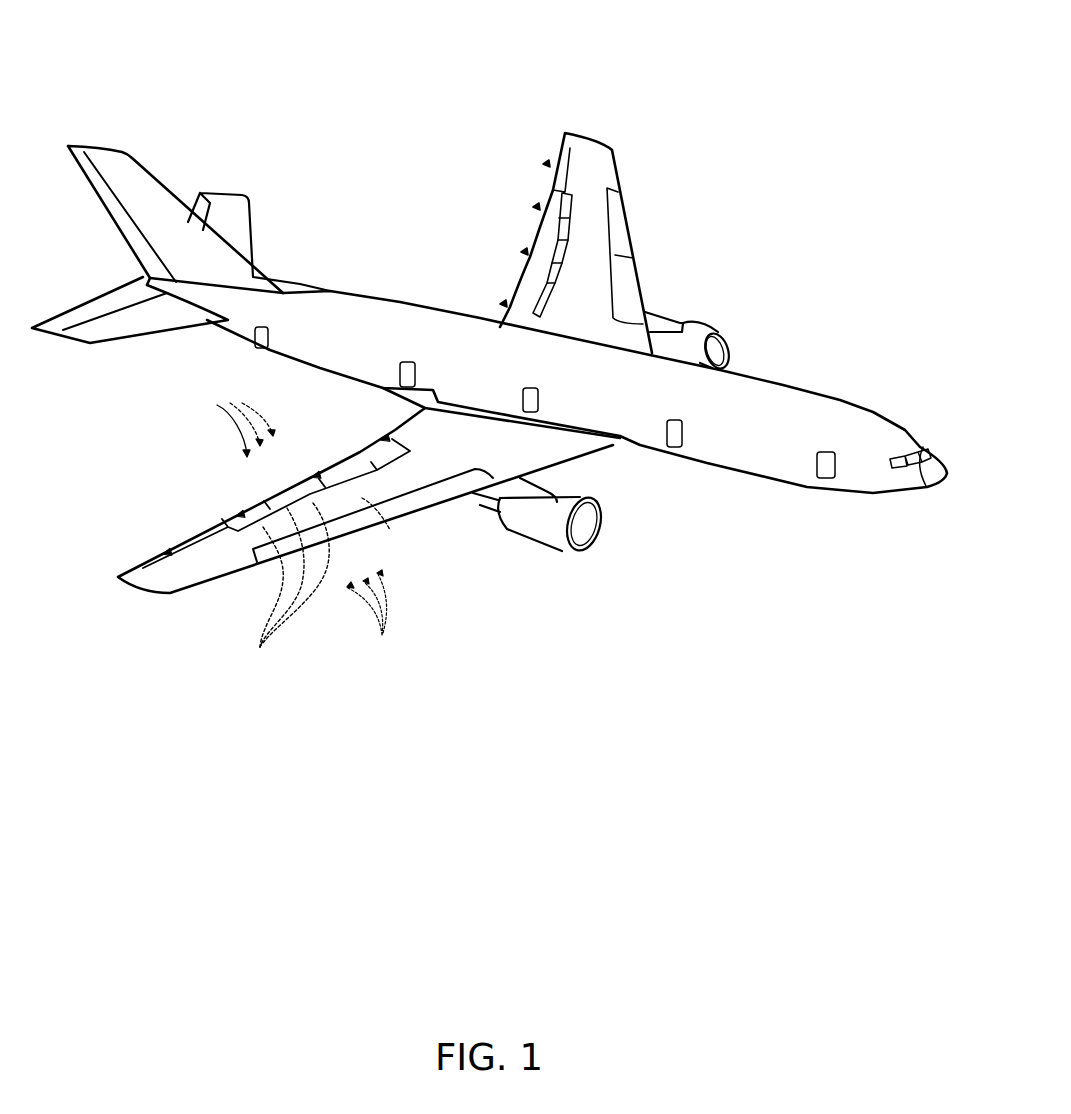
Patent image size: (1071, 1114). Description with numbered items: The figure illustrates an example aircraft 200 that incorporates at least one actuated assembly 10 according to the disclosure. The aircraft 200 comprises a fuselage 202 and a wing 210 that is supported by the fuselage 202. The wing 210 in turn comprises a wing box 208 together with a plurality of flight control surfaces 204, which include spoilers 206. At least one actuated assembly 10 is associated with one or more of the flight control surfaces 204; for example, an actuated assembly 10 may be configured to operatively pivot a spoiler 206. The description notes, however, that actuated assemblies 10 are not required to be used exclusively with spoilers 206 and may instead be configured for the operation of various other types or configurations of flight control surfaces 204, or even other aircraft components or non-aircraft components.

The actuated assembly 10 is at (229, 424).
The aircraft 200 is at (790, 89).
The fuselage 202 is at (783, 383).
The flight control surfaces 204 is at (374, 617).
The spoilers 206 is at (532, 585).
The wing box 208 is at (367, 483).
The wing 210 is at (213, 582).